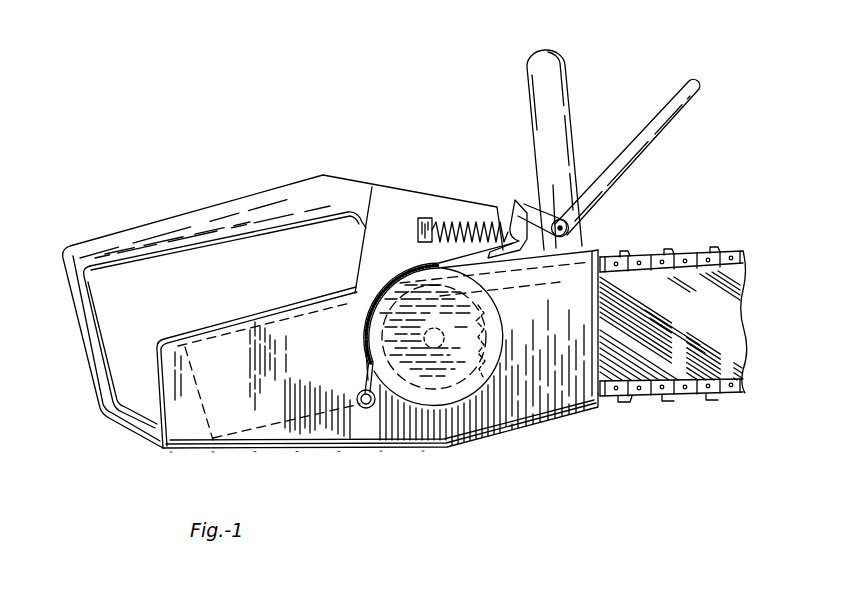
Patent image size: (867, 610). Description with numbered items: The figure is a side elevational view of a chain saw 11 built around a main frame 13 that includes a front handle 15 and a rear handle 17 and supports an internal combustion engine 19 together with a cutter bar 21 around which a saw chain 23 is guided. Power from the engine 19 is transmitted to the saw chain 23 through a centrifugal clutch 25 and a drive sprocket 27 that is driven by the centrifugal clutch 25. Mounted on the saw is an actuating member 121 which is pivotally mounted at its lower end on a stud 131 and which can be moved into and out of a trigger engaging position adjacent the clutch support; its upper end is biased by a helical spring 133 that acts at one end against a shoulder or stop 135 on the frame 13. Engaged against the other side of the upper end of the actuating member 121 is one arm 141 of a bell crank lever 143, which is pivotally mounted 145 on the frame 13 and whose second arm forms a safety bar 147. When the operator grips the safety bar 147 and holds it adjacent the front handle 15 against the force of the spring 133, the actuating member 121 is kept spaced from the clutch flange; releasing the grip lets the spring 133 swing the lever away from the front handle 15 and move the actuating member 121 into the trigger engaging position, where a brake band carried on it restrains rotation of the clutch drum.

The chain saw 11 is at (232, 372).
The main frame 13 is at (188, 458).
The front handle 15 is at (543, 65).
The rear handle 17 is at (187, 236).
The internal combustion engine 19 is at (237, 323).
The cutter bar 21 is at (700, 298).
The saw chain 23 is at (665, 393).
The centrifugal clutch 25 is at (446, 412).
The drive sprocket 27 is at (486, 357).
The actuating member 121 is at (366, 372).
The pivot pin 131 is at (360, 406).
The helical spring 133 is at (468, 222).
The shoulder or stop 135 is at (424, 217).
The arm of bell crank lever 141 is at (520, 203).
The bell crank lever 143 is at (638, 158).
The pivotal mounting 145 is at (569, 226).
The safety bar 147 is at (372, 334).